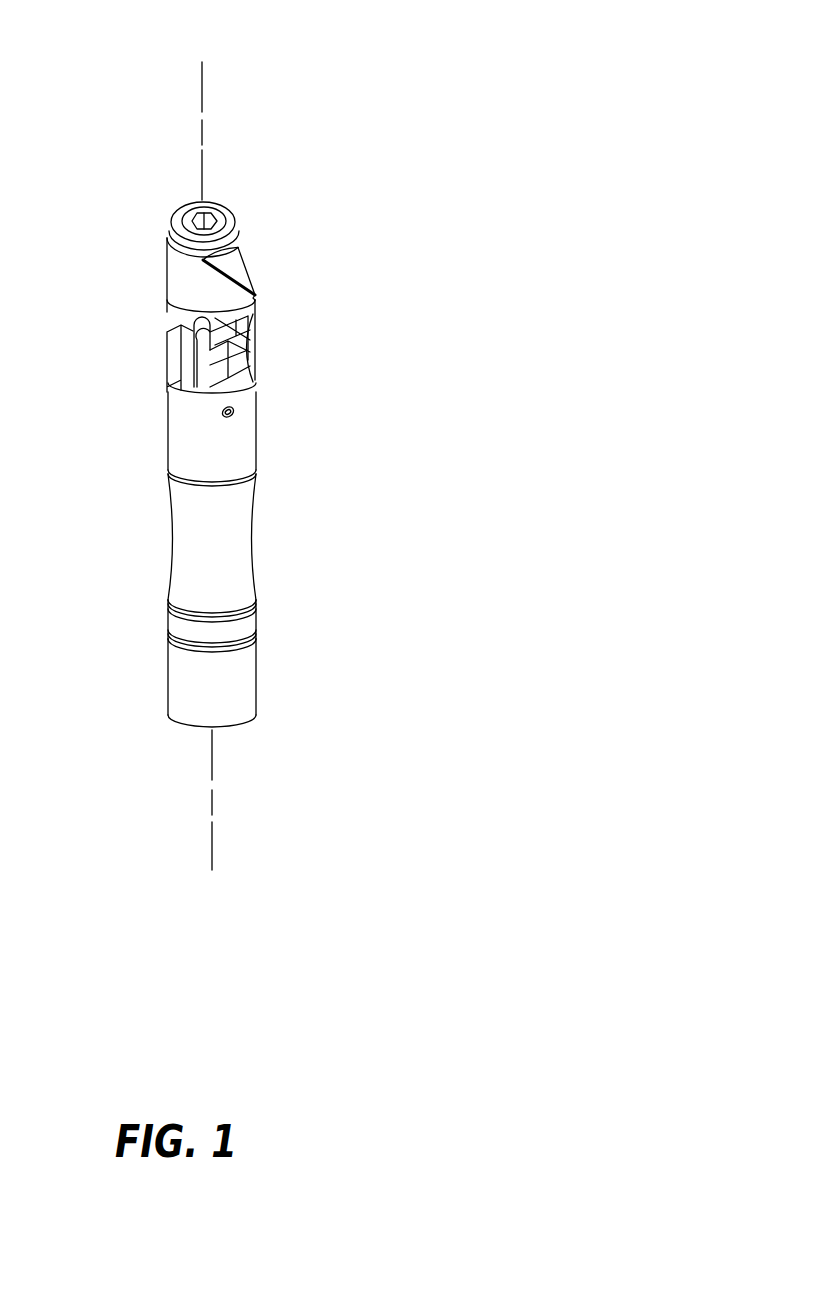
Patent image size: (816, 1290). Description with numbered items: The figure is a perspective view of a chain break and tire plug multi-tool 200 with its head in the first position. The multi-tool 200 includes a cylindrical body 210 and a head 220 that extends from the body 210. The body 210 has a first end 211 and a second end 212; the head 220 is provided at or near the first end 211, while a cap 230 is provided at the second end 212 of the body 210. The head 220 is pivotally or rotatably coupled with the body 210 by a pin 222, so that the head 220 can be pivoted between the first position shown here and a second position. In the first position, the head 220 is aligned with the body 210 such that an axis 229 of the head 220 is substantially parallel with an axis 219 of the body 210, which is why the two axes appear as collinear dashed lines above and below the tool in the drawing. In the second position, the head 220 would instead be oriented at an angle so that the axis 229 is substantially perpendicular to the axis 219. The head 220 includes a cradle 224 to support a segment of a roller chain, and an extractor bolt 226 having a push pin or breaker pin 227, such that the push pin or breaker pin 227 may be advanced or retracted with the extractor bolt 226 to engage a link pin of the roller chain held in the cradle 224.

The chain break and tire plug multi-tool 200 is at (395, 78).
The axis of head 229 is at (202, 88).
The head 220 is at (191, 260).
The extractor bolt 226 is at (220, 219).
The push pin or breaker pin 227 is at (203, 323).
The first end 211 is at (208, 342).
The cradle 224 is at (276, 340).
The pin 222 is at (232, 415).
The cylindrical body 210 is at (213, 571).
The second end 212 is at (134, 625).
The cap 230 is at (135, 705).
The axis of body 219 is at (211, 838).